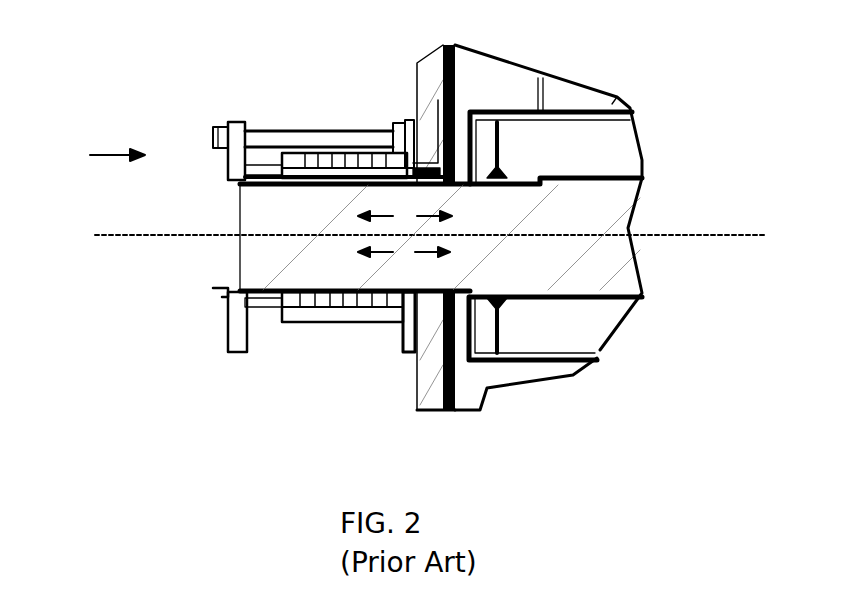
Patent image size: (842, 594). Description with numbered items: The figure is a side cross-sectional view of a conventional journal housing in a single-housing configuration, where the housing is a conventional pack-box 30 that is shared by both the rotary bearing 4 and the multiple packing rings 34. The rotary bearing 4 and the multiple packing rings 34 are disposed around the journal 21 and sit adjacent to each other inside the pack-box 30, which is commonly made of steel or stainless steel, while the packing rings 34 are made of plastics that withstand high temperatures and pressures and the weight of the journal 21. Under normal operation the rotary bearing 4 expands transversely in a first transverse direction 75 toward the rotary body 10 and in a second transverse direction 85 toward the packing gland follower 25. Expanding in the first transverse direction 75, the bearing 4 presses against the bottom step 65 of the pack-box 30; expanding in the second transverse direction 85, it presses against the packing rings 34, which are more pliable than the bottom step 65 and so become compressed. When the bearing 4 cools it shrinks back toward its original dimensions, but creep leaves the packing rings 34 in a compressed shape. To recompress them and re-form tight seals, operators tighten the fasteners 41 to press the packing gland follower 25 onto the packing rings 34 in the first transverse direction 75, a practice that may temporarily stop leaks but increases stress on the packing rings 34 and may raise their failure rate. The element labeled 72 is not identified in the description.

The rotary bearing 4 is at (365, 172).
The rotary body 10 is at (520, 360).
The journal 21 is at (247, 260).
The packing gland follower 25 is at (235, 352).
The conventional pack-box 30 is at (313, 324).
The multiple packing rings 34 is at (325, 168).
The fasteners 41 is at (217, 132).
The bottom step 65 is at (430, 167).
The housing end wall 72 is at (578, 258).
The first transverse direction 75 is at (108, 153).
The second transverse direction 85 is at (362, 214).